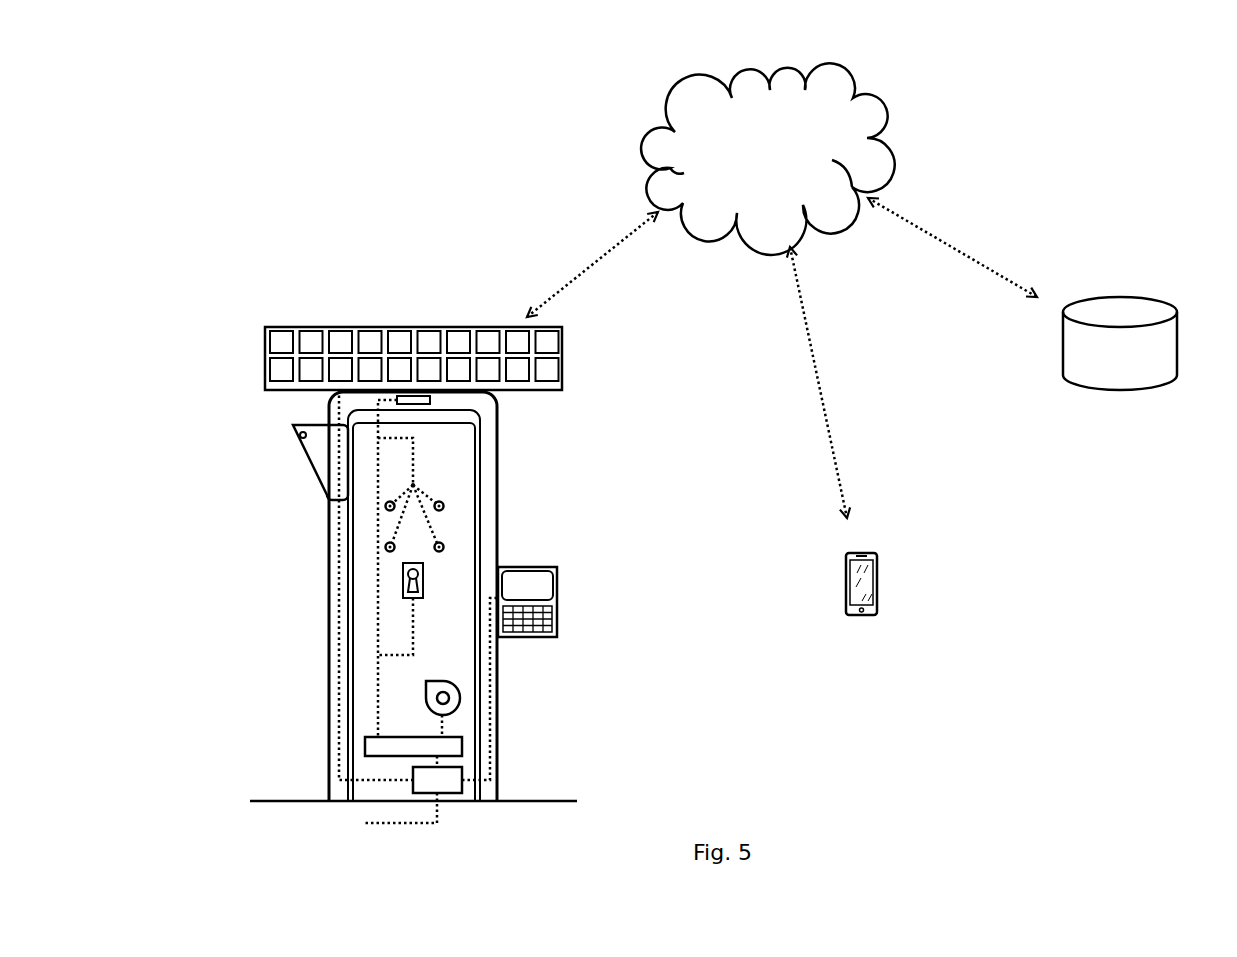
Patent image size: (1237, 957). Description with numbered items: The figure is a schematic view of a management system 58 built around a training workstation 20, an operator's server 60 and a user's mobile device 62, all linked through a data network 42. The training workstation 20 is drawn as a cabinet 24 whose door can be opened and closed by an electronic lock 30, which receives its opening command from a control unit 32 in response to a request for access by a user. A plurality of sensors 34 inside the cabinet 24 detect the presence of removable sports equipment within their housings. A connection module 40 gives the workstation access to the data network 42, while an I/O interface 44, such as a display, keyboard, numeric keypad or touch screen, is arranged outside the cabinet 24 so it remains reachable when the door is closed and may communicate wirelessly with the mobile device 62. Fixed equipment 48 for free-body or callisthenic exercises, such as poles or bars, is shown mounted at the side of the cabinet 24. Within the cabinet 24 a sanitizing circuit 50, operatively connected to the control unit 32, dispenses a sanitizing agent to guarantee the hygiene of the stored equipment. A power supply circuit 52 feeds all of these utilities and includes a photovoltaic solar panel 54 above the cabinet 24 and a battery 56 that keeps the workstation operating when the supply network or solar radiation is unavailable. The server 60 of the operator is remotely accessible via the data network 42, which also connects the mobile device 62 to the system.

The training workstation 20 is at (290, 325).
The cabinet 24 is at (477, 523).
The electronic lock 30 is at (402, 581).
The control unit 32 is at (370, 747).
The sensors 34 is at (388, 508).
The connection module 40 is at (430, 400).
The data network 42 is at (754, 164).
The I/O interface 44 is at (558, 600).
The fixed equipment 48 is at (292, 432).
The sanitizing circuit 50 is at (457, 700).
The power supply circuit 52 is at (438, 812).
The photovoltaic solar panel 54 is at (456, 345).
The battery 56 is at (455, 788).
The management system 58 is at (457, 118).
The server 60 is at (1109, 382).
The mobile device 62 is at (870, 585).